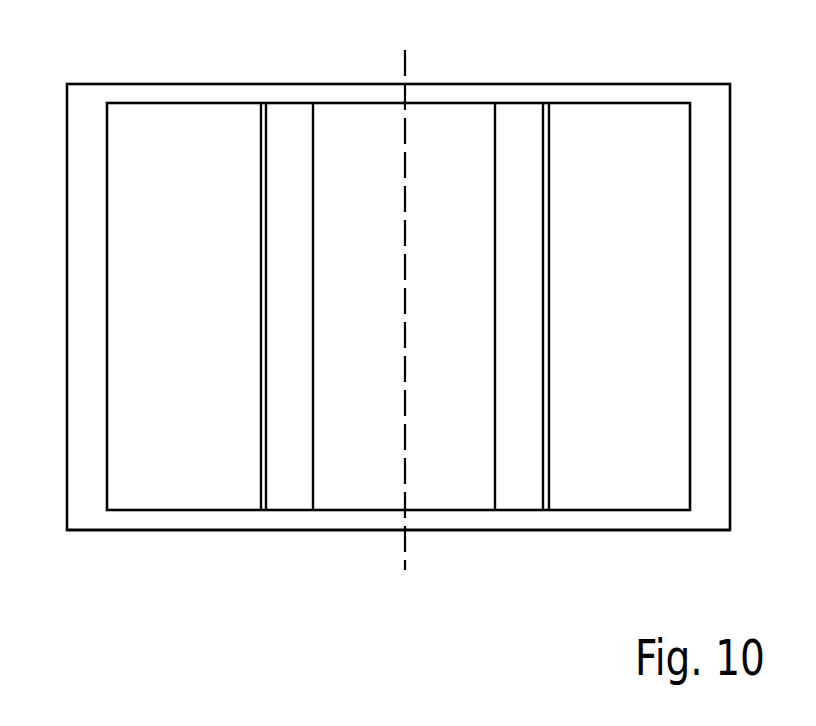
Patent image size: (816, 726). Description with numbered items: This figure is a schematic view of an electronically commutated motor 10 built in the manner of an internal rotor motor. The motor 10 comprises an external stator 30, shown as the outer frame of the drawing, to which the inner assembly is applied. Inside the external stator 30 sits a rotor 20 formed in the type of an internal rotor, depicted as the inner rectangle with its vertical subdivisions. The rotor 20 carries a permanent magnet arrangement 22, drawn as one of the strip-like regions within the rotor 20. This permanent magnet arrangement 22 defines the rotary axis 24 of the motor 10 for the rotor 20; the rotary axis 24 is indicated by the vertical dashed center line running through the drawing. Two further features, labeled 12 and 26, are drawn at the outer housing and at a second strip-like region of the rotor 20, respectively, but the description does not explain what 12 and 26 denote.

The electronically commutated motor 10 is at (562, 84).
The housing 12 is at (128, 84).
The rotor 20 is at (360, 103).
The permanent magnet arrangement 22 is at (515, 496).
The rotary axis 24 is at (405, 519).
The electrode strip 26 is at (263, 510).
The external stator 30 is at (164, 530).